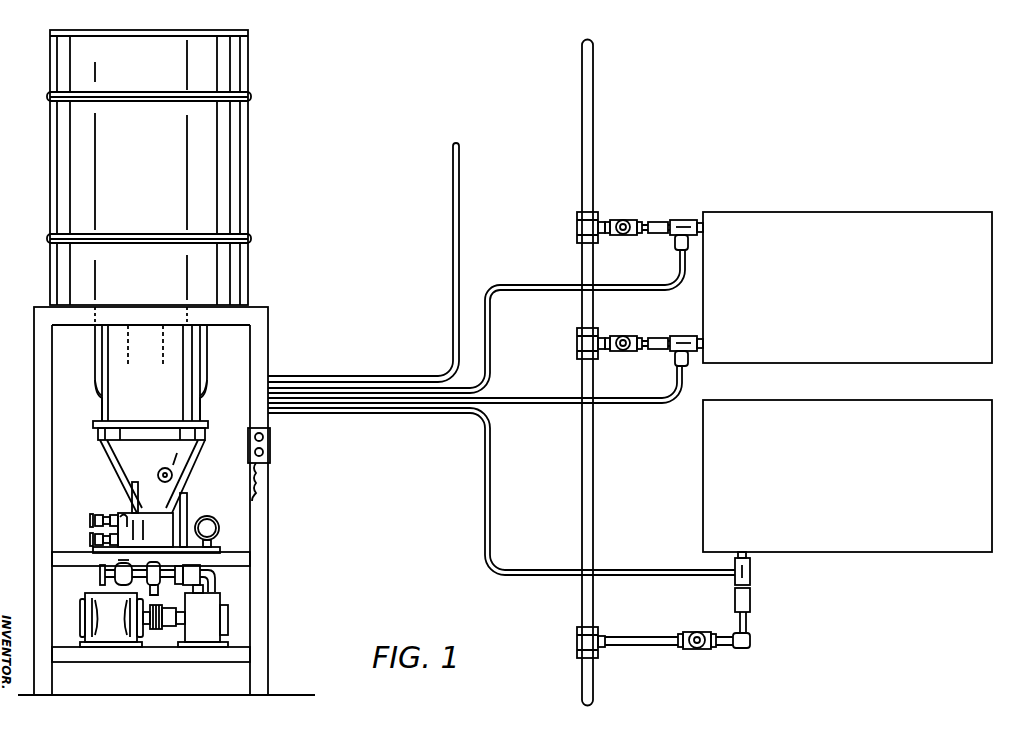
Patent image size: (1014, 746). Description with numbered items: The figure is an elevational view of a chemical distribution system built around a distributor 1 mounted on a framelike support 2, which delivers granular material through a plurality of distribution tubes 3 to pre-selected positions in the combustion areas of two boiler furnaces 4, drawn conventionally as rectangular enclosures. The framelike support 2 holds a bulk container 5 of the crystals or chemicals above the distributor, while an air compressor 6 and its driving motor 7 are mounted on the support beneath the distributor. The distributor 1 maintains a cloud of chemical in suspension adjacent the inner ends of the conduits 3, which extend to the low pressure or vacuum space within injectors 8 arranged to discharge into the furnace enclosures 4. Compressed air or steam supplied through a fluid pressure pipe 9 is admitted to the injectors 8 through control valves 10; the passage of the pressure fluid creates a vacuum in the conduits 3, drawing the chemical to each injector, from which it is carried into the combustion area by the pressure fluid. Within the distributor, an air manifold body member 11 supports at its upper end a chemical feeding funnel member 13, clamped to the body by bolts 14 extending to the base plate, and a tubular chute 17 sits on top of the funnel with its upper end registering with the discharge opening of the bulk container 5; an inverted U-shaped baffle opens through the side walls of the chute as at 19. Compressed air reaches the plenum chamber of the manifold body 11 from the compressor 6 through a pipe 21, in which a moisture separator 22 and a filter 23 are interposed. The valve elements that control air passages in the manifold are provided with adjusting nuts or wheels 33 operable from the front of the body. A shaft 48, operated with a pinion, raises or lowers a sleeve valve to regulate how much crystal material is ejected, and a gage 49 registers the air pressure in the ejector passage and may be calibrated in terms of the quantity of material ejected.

The distributor 1 is at (98, 433).
The framelike support 2 is at (38, 455).
The distribution tubes 3 is at (349, 390).
The boiler furnaces 4 is at (866, 228).
The bulk container 5 is at (225, 172).
The air compressor 6 is at (210, 603).
The driving motor 7 is at (110, 628).
The injectors 8 is at (683, 222).
The fluid pressure pipe 9 is at (588, 468).
The control valves 10 is at (624, 220).
The air manifold body member 11 is at (163, 520).
The chemical feeding funnel member 13 is at (212, 448).
The bolts 14 is at (132, 497).
The tubular chute 17 is at (200, 350).
The baffle openings 19 is at (101, 394).
The pipe 21 is at (110, 575).
The moisture separator 22 is at (190, 572).
The filter 23 is at (150, 585).
The adjusting nuts or wheels 33 is at (82, 521).
The shaft 48 is at (173, 475).
The gage 49 is at (219, 529).